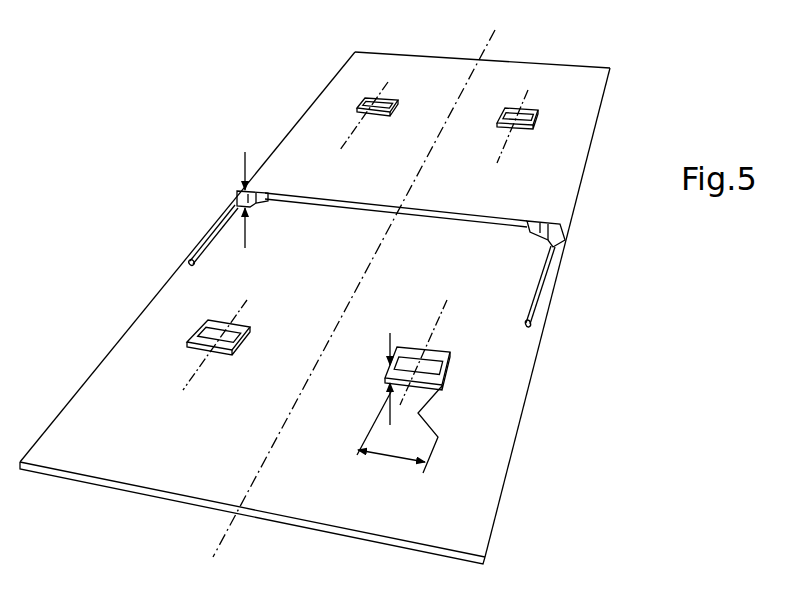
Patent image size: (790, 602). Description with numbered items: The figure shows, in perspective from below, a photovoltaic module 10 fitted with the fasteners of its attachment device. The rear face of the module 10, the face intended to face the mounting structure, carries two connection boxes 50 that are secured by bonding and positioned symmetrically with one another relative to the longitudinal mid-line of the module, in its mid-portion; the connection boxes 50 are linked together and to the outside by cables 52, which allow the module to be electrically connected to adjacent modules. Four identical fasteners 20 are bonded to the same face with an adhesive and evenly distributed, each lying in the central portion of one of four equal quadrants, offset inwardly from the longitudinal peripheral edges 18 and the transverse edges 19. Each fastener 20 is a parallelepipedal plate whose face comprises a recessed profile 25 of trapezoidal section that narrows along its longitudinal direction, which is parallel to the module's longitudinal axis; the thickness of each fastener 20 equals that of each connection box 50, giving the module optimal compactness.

The photovoltaic module 10 is at (352, 295).
The longitudinal peripheral edge 18 is at (297, 120).
The transverse edge 19 is at (510, 58).
The fastener 20 is at (497, 113).
The recessed profile 25 is at (375, 93).
The connection box 50 is at (243, 193).
The cable 52 is at (214, 228).